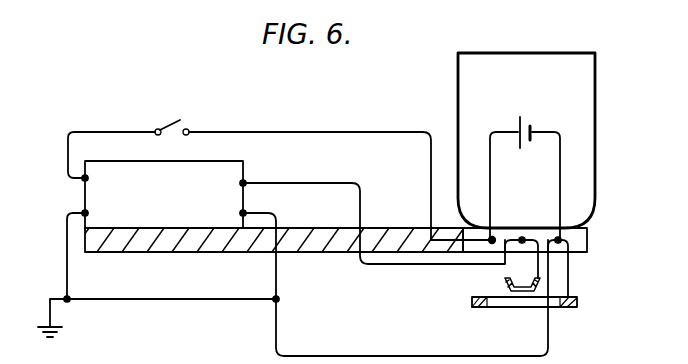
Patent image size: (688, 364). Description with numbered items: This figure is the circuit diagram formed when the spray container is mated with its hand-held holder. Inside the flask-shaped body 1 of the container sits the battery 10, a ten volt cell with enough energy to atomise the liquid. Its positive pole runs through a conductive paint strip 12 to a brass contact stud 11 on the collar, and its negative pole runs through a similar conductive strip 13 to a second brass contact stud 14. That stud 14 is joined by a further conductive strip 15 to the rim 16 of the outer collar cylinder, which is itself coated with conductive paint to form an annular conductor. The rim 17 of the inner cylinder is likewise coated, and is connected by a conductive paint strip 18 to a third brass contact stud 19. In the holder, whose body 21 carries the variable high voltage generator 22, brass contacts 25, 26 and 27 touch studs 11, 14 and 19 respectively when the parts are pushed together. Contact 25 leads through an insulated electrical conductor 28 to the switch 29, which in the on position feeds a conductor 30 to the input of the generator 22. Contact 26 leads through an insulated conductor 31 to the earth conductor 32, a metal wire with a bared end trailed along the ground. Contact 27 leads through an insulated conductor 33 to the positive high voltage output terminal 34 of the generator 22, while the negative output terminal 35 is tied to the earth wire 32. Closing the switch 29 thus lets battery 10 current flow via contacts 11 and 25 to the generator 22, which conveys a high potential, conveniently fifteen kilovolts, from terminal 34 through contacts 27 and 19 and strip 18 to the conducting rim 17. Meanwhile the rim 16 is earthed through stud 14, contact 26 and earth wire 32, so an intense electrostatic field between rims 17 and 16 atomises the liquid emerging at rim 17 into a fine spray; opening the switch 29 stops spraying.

The flask-shaped body 1 is at (597, 62).
The battery 10 is at (519, 127).
The conductive paint strip 12 is at (490, 176).
The conductive strip 13 is at (560, 157).
The second brass contact stud 14 is at (561, 239).
The brass contact 26 is at (560, 240).
The conductive strip 15 is at (568, 282).
The rim of outer cylinder 16 is at (472, 302).
The rim of inner cylinder 17 is at (535, 288).
The conductive paint strip 18 is at (538, 258).
The third brass contact stud 19 is at (591, 212).
The brass contact 27 is at (522, 240).
The brass contact stud 11 is at (453, 266).
The brass contact 25 is at (492, 241).
The holder body 21 is at (171, 252).
The variable high voltage generator 22 is at (107, 189).
The insulated electrical conductor 28 is at (318, 131).
The switch 29 is at (172, 124).
The conductor 30 is at (68, 153).
The insulated electrical conductor 31 is at (355, 356).
The earth conductor 32 is at (60, 333).
The insulated electrical conductor 33 is at (361, 204).
The positive high voltage output terminal 34 is at (243, 183).
The negative output terminal 35 is at (243, 213).